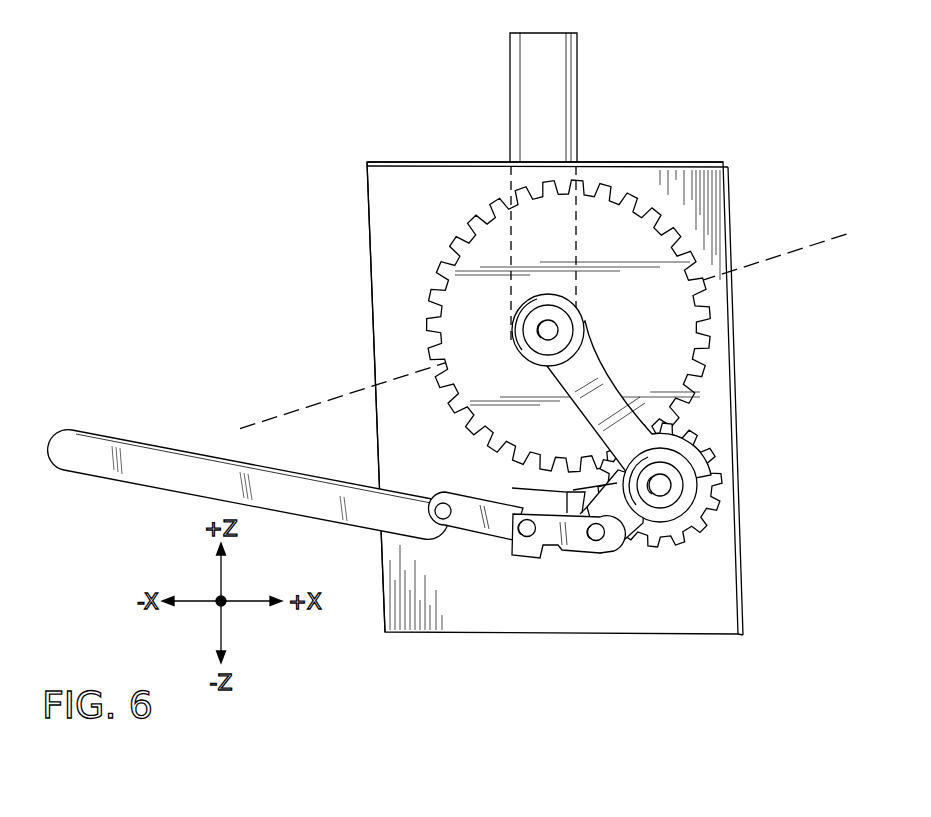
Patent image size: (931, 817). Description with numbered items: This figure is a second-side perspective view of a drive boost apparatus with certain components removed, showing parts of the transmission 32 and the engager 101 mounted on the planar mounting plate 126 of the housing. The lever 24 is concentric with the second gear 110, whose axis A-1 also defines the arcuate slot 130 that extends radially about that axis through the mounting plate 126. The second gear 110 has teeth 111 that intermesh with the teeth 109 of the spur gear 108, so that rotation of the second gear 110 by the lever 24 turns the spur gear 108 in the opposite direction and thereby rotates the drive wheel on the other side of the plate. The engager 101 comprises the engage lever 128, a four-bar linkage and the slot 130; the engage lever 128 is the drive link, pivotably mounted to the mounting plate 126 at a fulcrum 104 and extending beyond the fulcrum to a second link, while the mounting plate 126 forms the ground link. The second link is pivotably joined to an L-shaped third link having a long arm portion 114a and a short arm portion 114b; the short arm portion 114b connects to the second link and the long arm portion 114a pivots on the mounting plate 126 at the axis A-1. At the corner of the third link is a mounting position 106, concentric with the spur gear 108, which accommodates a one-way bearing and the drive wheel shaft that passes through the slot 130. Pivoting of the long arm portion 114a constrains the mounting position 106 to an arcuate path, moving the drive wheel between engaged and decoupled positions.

The transmission 32 is at (373, 125).
The lever 24 is at (560, 110).
The planar mounting plate 126 is at (670, 183).
The axis A-1 is at (792, 255).
The second gear 110 is at (452, 340).
The teeth 111 is at (693, 378).
The long arm portion 114a is at (612, 362).
The short arm portion 114b is at (628, 522).
The spur gear 108 is at (693, 447).
The teeth 109 is at (727, 478).
The mounting position 106 is at (670, 502).
The arcuate slot 130 is at (512, 488).
The fulcrum 104 is at (450, 517).
The engager 101 is at (541, 588).
The engage lever 128 is at (160, 463).